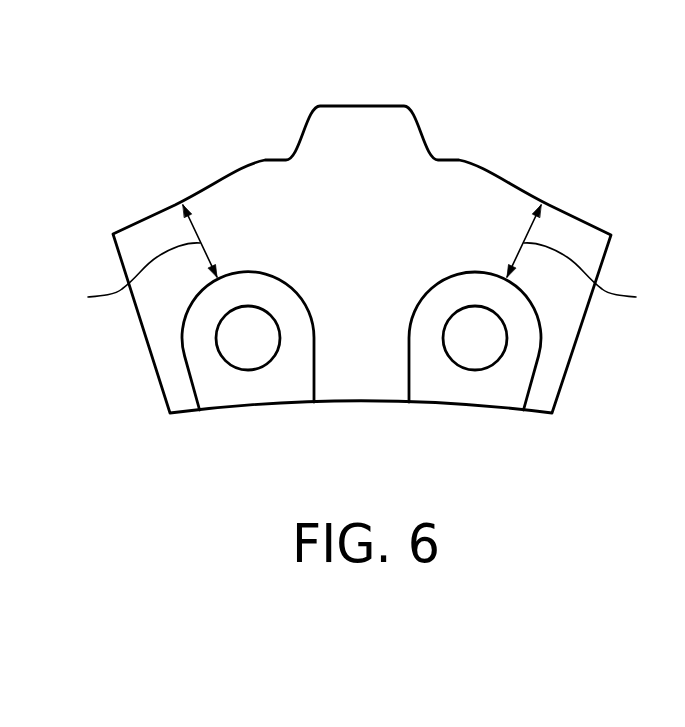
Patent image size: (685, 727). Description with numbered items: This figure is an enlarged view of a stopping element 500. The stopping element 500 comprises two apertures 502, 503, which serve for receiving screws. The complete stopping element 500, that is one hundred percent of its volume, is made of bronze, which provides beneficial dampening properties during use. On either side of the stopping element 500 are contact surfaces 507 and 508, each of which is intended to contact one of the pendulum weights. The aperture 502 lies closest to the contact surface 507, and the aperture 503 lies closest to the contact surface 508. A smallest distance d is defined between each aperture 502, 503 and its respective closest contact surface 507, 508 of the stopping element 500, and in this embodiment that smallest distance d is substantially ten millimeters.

The stopping element 500 is at (362, 145).
The aperture 502 is at (475, 339).
The aperture 503 is at (247, 339).
The contact surface 507 is at (561, 210).
The contact surface 508 is at (163, 210).
The smallest distance d is at (362, 297).